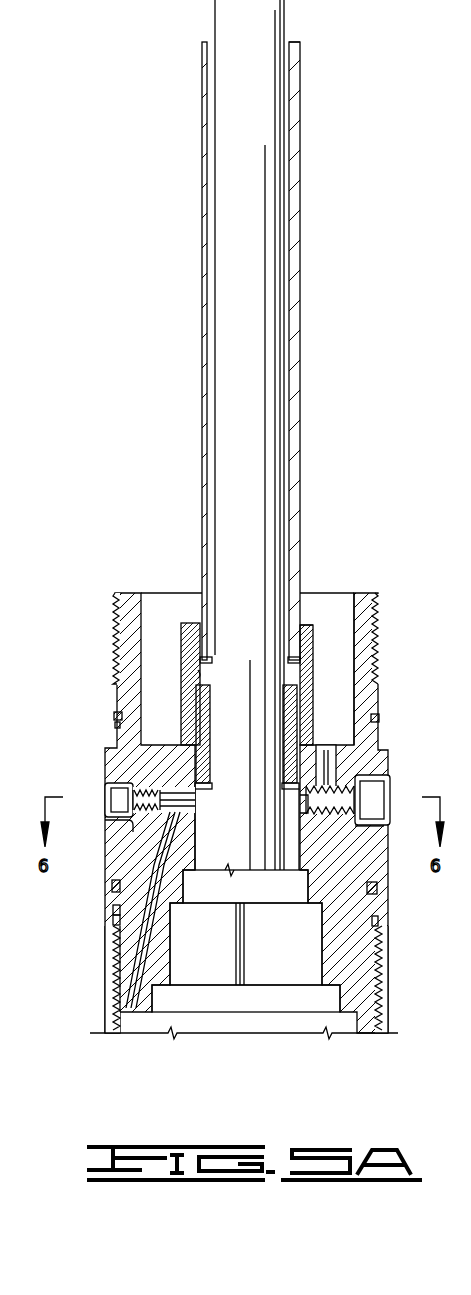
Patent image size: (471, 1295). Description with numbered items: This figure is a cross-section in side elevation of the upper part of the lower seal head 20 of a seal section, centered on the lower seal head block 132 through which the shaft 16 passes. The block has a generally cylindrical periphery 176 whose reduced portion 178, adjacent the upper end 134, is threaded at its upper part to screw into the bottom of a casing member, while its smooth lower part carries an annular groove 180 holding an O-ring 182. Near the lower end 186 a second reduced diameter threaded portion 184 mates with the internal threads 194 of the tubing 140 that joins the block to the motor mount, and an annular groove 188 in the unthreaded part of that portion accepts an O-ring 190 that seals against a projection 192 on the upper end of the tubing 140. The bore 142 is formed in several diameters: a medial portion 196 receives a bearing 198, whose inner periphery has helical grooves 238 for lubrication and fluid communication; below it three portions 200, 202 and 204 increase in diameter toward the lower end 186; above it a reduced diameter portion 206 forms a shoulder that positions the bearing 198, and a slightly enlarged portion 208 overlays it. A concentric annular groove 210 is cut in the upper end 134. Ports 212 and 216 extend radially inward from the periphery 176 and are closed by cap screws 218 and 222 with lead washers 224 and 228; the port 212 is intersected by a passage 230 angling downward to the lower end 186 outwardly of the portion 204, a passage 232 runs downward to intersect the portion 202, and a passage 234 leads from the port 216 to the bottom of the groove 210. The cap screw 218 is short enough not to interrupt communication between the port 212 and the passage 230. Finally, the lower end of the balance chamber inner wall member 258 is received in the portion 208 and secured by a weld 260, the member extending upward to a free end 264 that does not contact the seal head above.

The shaft 16 is at (252, 371).
The lower seal head 20 is at (388, 653).
The lower seal head block 132 is at (378, 606).
The upper end 134 is at (358, 593).
The tubing 140 is at (386, 988).
The bore 142 is at (196, 832).
The periphery 176 is at (105, 757).
The reduced portion 178 is at (115, 603).
The annular groove 180 is at (117, 723).
The O-ring 182 is at (114, 714).
The reduced diameter threaded portion 184 is at (113, 975).
The lower end 186 is at (358, 1034).
The annular groove 188 is at (112, 886).
The O-ring 190 is at (113, 906).
The projection 192 is at (113, 920).
The internal threads 194 is at (113, 960).
The medial portion 196 is at (296, 856).
The bearing 198 is at (302, 714).
The bore portion 200 is at (308, 892).
The bore portion 202 is at (322, 945).
The bore portion 204 is at (340, 996).
The reduced diameter portion 206 is at (207, 673).
The bore portion 208 is at (300, 645).
The annular groove 210 is at (141, 622).
The port 212 is at (108, 778).
The port 216 is at (350, 778).
The cap screw 218 is at (110, 800).
The cap screw 222 is at (378, 793).
The lead washer 224 is at (106, 831).
The lead washer 228 is at (355, 833).
The passage 230 is at (166, 842).
The passage 232 is at (240, 940).
The passage 234 is at (380, 722).
The helical grooves 238 is at (273, 720).
The balance chamber inner wall member 258 is at (298, 221).
The weld 260 is at (299, 624).
The free end 264 is at (298, 42).